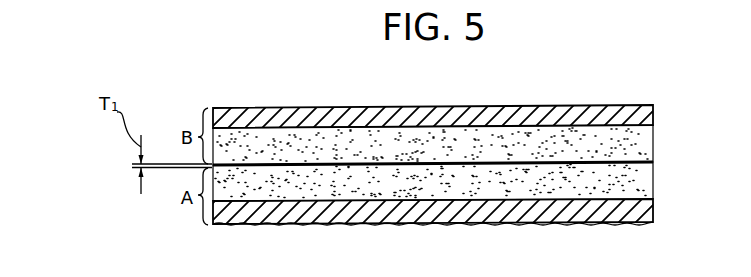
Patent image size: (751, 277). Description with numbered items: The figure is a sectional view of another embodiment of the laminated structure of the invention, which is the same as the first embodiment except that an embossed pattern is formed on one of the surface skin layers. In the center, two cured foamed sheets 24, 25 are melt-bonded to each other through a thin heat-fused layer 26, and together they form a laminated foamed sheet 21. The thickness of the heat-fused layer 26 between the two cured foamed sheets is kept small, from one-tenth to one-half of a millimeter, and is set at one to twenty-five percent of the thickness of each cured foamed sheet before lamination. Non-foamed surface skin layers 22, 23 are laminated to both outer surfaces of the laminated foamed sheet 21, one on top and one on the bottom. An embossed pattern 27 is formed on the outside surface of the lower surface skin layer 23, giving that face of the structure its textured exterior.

The laminated foamed sheet 21 is at (692, 123).
The non-foamed surface skin layer 22 is at (654, 106).
The non-foamed surface skin layer 23 is at (654, 219).
The cured foamed sheet 24 is at (645, 141).
The cured foamed sheet 25 is at (645, 180).
The heat-fused layer 26 is at (653, 162).
The embossed pattern 27 is at (448, 225).